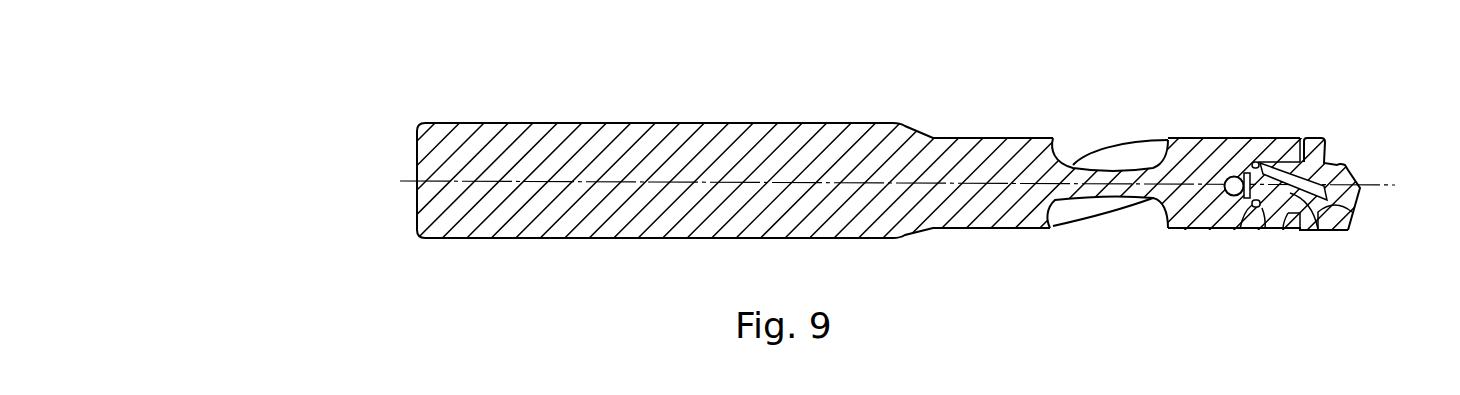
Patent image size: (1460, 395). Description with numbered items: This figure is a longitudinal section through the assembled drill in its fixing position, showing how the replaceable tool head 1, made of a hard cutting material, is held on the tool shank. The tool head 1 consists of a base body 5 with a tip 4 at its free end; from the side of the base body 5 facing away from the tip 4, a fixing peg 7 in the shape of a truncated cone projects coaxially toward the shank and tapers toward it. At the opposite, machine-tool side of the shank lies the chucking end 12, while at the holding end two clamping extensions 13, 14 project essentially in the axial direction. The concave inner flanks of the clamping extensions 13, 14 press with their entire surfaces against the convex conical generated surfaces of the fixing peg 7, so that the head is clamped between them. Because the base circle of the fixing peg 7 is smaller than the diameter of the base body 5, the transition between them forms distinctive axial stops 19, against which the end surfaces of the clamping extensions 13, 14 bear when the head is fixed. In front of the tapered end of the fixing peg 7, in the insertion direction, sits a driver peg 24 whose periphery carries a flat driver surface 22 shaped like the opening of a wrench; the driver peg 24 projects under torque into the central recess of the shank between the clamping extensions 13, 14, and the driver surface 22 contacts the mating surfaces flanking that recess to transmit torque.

The tool head 1 is at (1331, 116).
The tip 4 is at (1360, 183).
The base body 5 is at (1325, 172).
The fixing peg 7 is at (1315, 228).
The chucking end 12 is at (417, 198).
The clamping extension 13 is at (1263, 230).
The clamping extension 14 is at (1276, 150).
The axial stop 19 is at (1289, 158).
The driver surface 22 is at (1238, 203).
The driver peg 24 is at (1227, 176).